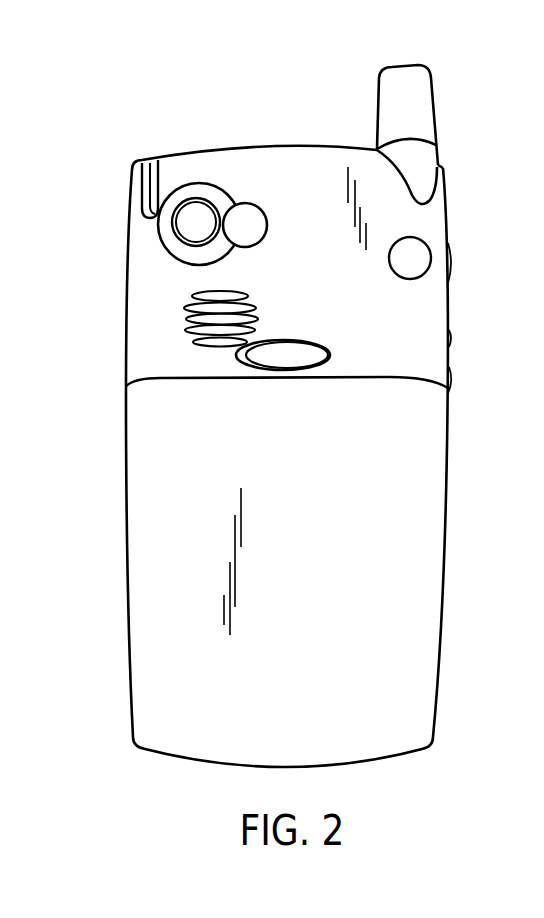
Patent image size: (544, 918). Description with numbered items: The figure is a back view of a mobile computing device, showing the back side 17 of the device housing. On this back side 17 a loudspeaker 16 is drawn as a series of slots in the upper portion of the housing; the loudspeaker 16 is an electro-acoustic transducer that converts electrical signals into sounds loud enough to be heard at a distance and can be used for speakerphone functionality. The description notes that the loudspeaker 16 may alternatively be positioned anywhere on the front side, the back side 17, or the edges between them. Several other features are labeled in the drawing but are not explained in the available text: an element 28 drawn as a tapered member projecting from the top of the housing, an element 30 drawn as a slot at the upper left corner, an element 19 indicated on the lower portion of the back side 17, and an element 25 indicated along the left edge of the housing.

The loudspeaker 16 is at (187, 319).
The back side 17 is at (310, 558).
The lower housing portion 19 is at (430, 440).
The housing 25 is at (125, 430).
The antenna 28 is at (435, 97).
The latch slot 30 is at (153, 162).